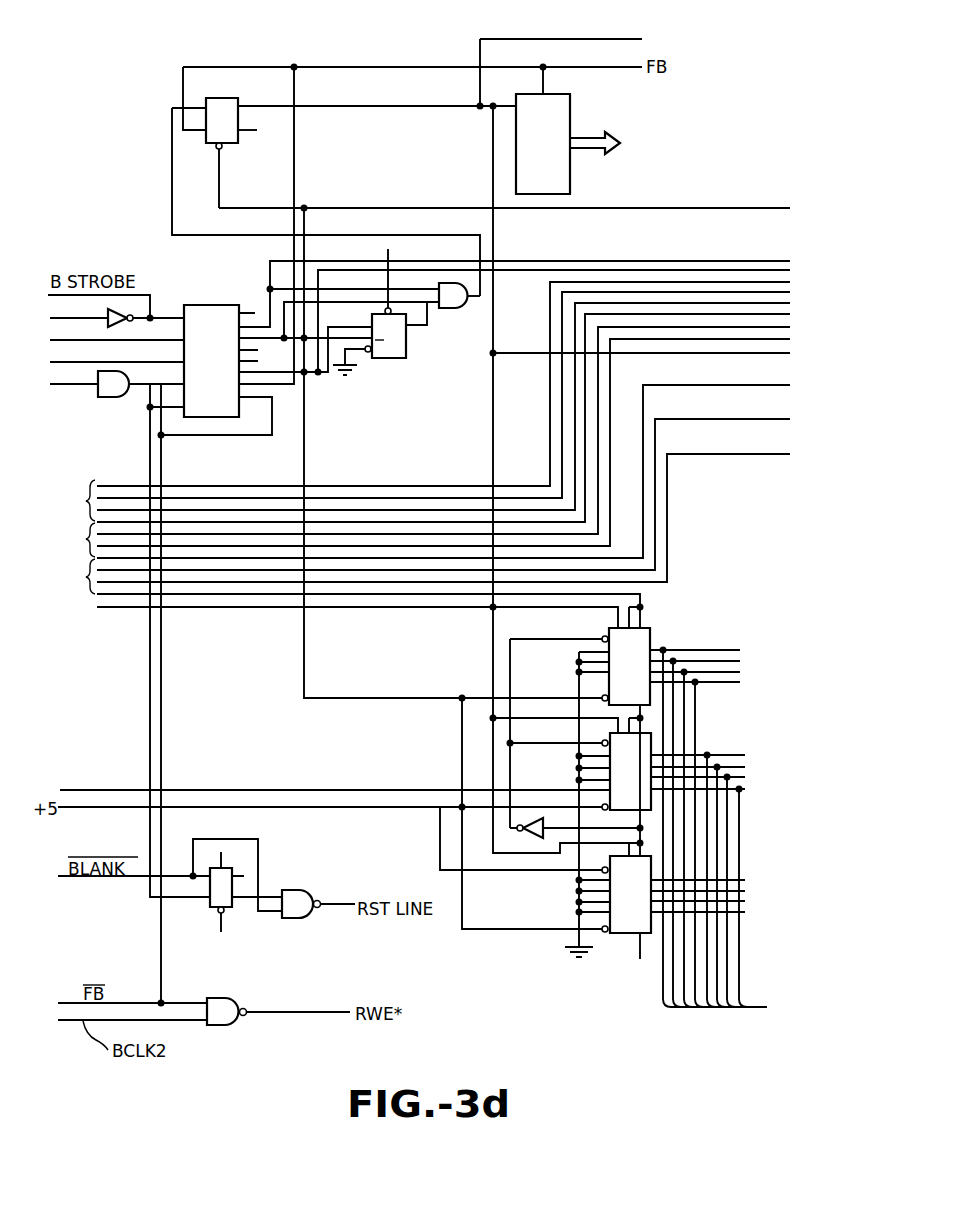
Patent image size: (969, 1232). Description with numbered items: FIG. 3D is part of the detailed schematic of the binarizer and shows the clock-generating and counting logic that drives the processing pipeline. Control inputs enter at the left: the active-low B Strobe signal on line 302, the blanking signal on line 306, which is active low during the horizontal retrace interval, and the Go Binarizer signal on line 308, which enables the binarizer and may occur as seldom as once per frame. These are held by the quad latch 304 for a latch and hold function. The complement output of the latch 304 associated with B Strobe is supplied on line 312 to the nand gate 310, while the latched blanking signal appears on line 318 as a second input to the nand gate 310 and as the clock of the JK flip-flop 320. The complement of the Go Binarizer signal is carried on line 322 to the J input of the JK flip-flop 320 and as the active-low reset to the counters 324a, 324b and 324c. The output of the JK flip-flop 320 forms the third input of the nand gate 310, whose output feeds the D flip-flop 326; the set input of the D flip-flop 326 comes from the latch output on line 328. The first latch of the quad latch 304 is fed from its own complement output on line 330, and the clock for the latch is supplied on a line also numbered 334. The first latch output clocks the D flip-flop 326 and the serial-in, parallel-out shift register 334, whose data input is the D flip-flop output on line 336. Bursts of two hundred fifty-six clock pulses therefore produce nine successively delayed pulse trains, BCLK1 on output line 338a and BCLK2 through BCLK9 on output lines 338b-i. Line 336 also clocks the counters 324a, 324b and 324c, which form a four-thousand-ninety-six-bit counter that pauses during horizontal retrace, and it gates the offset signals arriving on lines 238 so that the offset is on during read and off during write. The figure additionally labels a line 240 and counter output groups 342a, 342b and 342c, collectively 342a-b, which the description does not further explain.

The B Strobe line 302 is at (56, 302).
The quad latch 304 is at (211, 361).
The blanking signal line 306 is at (56, 325).
The Go Binarizer signal line 308 is at (56, 347).
The nand gate 310 is at (447, 308).
The line 312 is at (268, 288).
The line 318 is at (283, 342).
The JK flip-flop 320 is at (407, 350).
The line 322 is at (320, 375).
The counter 324a is at (631, 666).
The counter 324b is at (632, 771).
The counter 324c is at (632, 894).
The D flip-flop 326 is at (232, 135).
The line 328 is at (306, 206).
The line 330 is at (163, 437).
The shift register 334 is at (572, 116).
The line 336 is at (249, 86).
The output line 338a is at (565, 38).
The output lines 338b-i is at (659, 152).
The offset signal lines 238 is at (419, 455).
The line 240 is at (78, 790).
The address output lines 342a is at (745, 644).
The address output lines 342b is at (748, 750).
The address output lines 342c is at (748, 872).
The address bus ADD0-ADD7 342a-b is at (765, 1008).